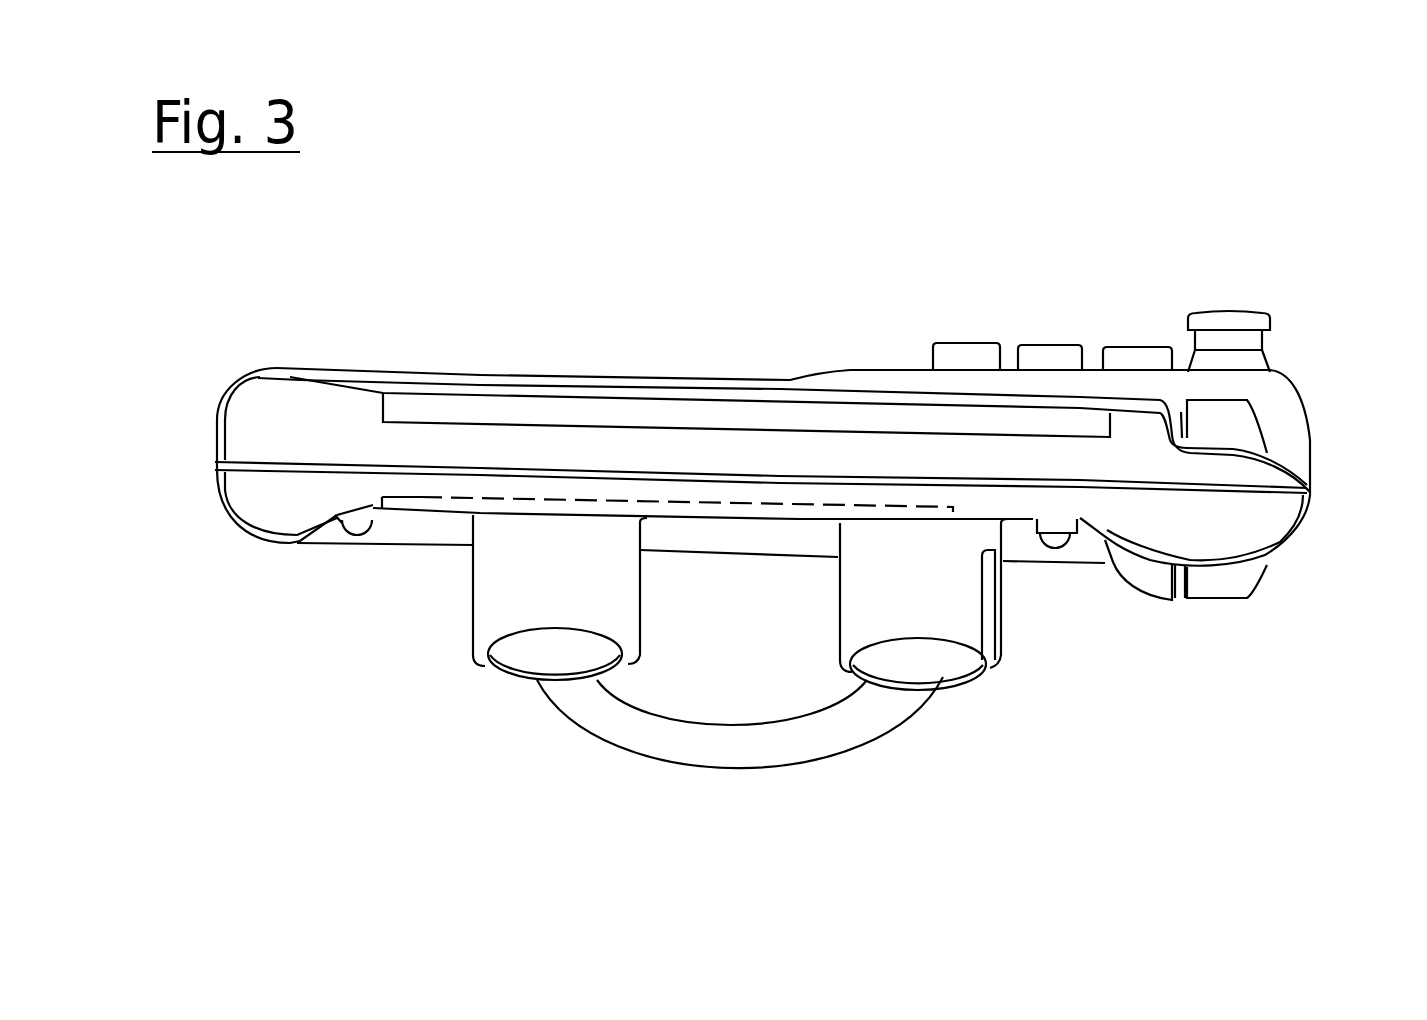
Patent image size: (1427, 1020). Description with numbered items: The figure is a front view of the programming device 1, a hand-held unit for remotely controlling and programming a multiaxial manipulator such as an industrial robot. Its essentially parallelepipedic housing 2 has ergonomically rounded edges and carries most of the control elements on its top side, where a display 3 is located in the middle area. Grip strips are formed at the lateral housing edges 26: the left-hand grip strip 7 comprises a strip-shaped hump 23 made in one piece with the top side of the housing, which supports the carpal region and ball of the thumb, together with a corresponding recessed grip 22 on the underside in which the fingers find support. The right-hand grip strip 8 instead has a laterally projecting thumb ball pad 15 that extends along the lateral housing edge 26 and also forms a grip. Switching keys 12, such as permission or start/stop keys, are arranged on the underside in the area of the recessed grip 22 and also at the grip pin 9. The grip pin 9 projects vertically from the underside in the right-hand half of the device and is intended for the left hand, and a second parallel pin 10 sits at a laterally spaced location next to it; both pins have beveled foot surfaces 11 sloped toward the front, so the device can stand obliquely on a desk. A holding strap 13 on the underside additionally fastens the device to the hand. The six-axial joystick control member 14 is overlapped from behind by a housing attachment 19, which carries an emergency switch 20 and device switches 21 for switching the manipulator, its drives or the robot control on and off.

The programming device 1 is at (742, 318).
The housing 2 is at (640, 377).
The display 3 is at (493, 412).
The grip strip 7 is at (243, 383).
The grip strip 8 is at (1295, 530).
The grip pin 9 is at (897, 577).
The second parallel pin 10 is at (567, 570).
The beveled foot surfaces 11 is at (548, 660).
The switching keys 12 is at (403, 506).
The holding strap 13 is at (737, 750).
The control member 14 is at (1225, 578).
The thumb ball pad 15 is at (1267, 558).
The housing attachment 19 is at (912, 368).
The emergency switch 20 is at (1233, 335).
The device switches 21 is at (1040, 355).
The recessed grip 22 is at (333, 540).
The hump 23 is at (258, 378).
The lateral housing edge 26 is at (213, 445).